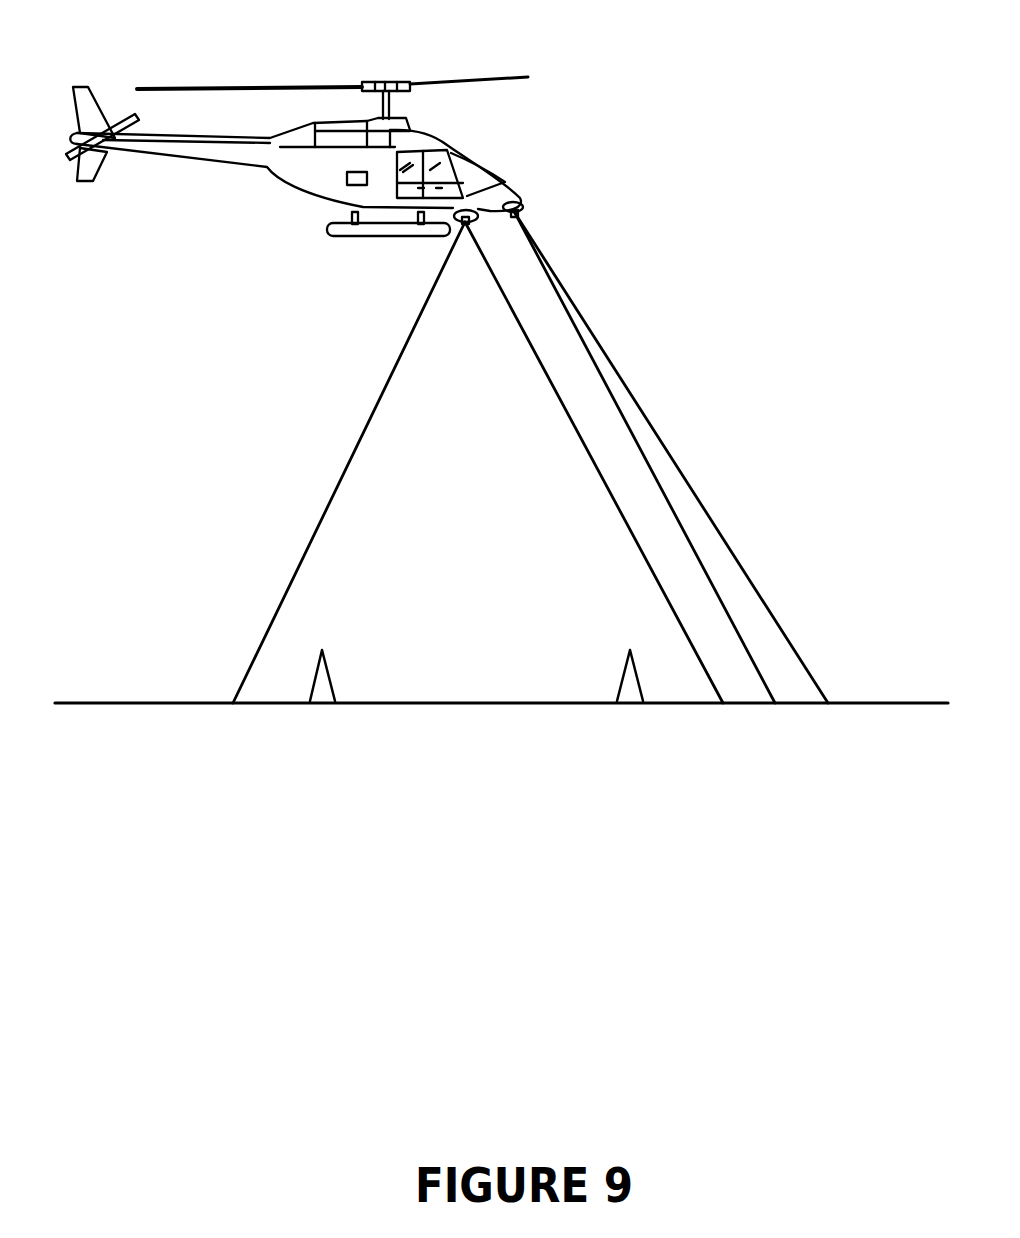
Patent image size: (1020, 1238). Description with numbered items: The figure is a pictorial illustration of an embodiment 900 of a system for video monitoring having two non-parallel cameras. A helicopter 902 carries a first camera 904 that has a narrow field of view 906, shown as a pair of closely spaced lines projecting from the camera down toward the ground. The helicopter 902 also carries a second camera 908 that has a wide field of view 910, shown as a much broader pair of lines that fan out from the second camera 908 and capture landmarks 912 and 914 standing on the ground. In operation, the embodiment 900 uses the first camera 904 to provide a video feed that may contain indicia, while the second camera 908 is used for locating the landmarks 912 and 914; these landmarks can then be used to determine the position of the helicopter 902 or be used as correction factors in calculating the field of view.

The embodiment of a system for video monitoring having two non-parallel cameras 900 is at (443, 766).
The helicopter 902 is at (493, 168).
The first camera 904 is at (653, 177).
The narrow field of view 906 is at (695, 378).
The second camera 908 is at (460, 223).
The wide field of view 910 is at (320, 528).
The landmark 912 is at (315, 660).
The landmark 914 is at (637, 668).